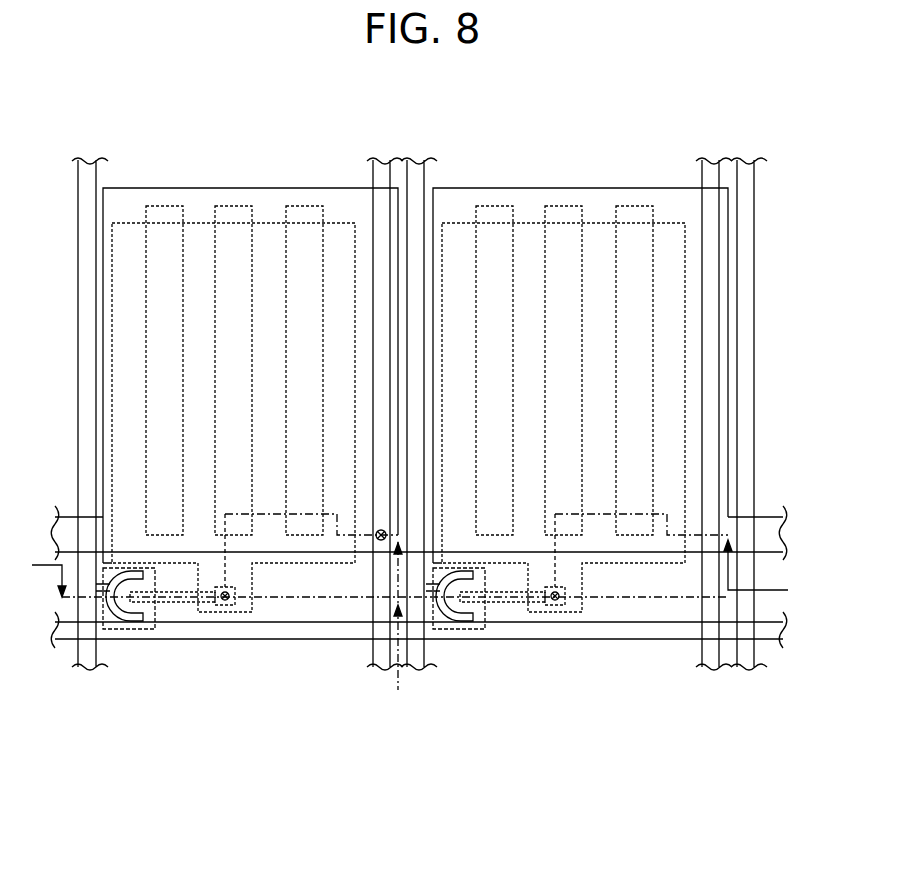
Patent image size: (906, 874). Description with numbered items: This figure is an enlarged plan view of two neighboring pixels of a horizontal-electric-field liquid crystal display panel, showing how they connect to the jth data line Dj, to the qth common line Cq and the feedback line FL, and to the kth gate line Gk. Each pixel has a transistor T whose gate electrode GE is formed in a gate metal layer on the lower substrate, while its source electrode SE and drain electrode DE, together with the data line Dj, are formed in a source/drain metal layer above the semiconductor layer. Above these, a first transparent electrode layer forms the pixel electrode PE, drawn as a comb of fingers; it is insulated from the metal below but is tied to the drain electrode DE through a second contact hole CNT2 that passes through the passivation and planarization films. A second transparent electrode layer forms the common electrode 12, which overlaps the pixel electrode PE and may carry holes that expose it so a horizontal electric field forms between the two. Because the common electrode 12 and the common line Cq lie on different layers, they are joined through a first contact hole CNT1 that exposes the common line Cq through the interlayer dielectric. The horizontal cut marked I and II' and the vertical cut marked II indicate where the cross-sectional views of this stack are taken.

The jth data line Dj is at (86, 160).
The qth common line Cq is at (386, 160).
The feedback line FL is at (712, 160).
The kth gate line Gk is at (180, 641).
The common electrode 12 is at (212, 187).
The pixel electrode PE is at (268, 566).
The transistor T is at (328, 659).
The gate electrode GE is at (118, 626).
The source electrode SE is at (130, 612).
The drain electrode DE is at (190, 604).
The first contact hole CNT1 is at (380, 542).
The second contact hole CNT2 is at (226, 606).
The section line I-I' I is at (375, 576).
The section line I-I' end II' is at (756, 565).
The section line II-II' II is at (399, 627).